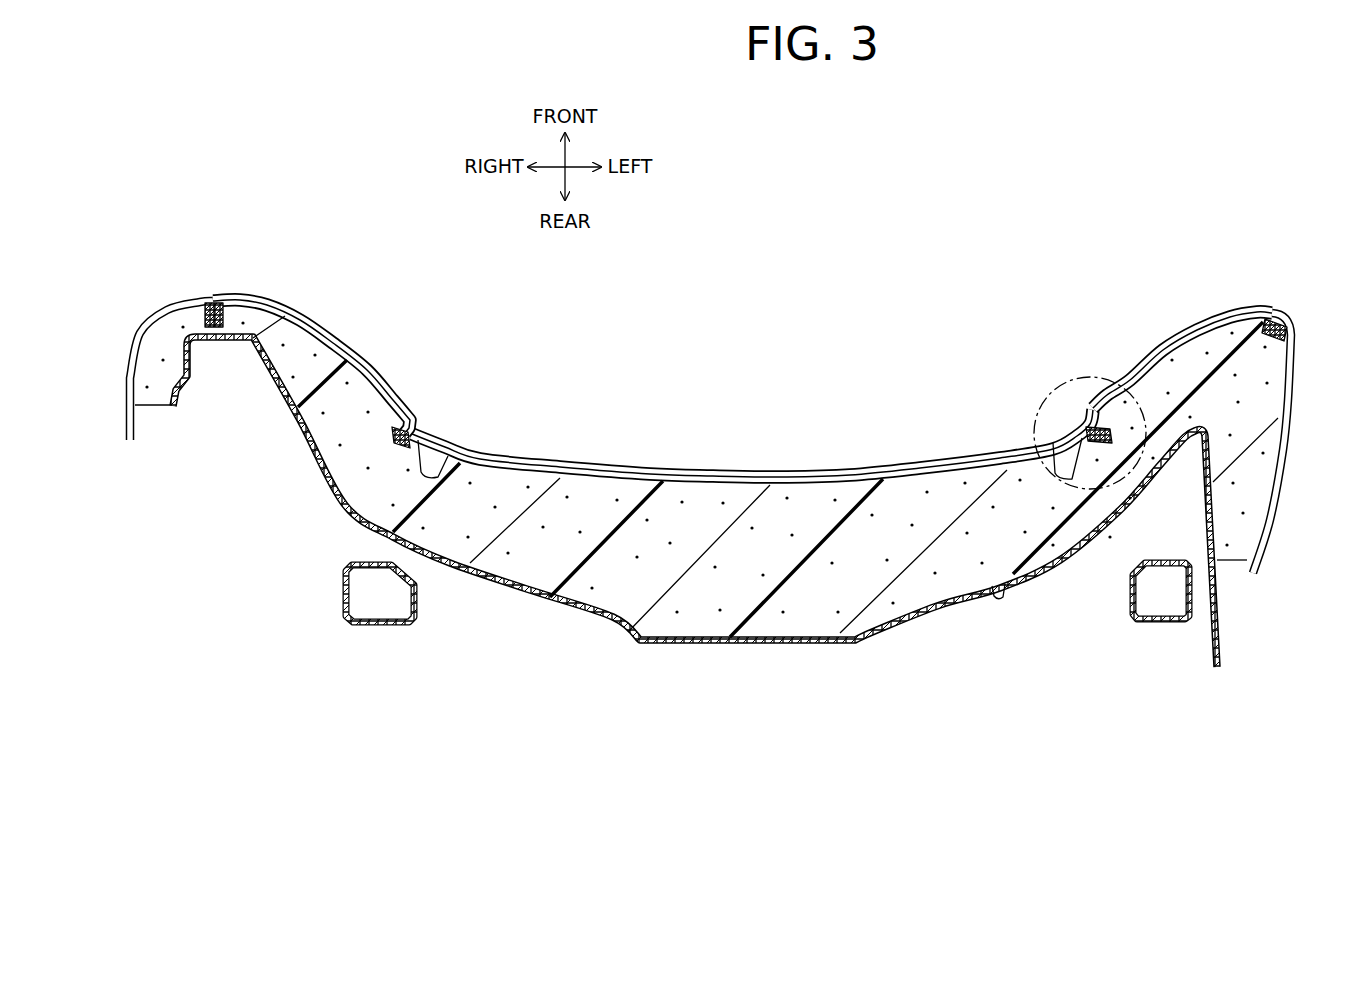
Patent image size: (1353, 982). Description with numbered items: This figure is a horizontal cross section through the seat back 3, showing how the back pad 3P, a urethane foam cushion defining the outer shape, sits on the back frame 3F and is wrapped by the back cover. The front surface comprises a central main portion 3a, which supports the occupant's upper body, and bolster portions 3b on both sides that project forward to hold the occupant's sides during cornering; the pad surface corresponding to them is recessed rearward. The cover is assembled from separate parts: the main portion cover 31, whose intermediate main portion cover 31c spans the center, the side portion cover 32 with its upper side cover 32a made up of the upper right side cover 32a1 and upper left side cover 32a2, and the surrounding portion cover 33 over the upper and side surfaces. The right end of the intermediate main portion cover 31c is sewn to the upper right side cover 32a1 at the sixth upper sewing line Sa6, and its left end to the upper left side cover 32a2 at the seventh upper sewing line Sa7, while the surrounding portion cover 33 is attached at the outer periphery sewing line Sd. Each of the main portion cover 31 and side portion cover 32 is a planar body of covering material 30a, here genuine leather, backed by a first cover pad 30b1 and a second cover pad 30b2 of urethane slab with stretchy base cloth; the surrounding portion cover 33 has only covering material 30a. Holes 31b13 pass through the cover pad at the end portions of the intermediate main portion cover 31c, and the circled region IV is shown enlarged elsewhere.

The seat back 3 is at (849, 290).
The main portion 3a is at (645, 463).
The bolster portions 3b is at (303, 318).
The back frame 3F is at (380, 628).
The back pad 3P is at (585, 510).
The covering material 30a is at (338, 338).
The first cover pad 30b1 is at (360, 358).
The second cover pad 30b2 is at (393, 390).
The main portion cover 31 is at (752, 425).
The intermediate main portion cover 31c is at (698, 470).
The holes 31b13 is at (452, 463).
The side portion cover 32 is at (742, 307).
The upper side cover 32a is at (742, 307).
The upper right side cover 32a1 is at (264, 331).
The upper left side cover 32a2 is at (1230, 310).
The surrounding portion cover 33 is at (127, 352).
The outer periphery sewing line Sd is at (209, 300).
The sixth upper sewing line Sa6 is at (410, 445).
The seventh upper sewing line Sa7 is at (1107, 440).
The detail section IV is at (1062, 393).